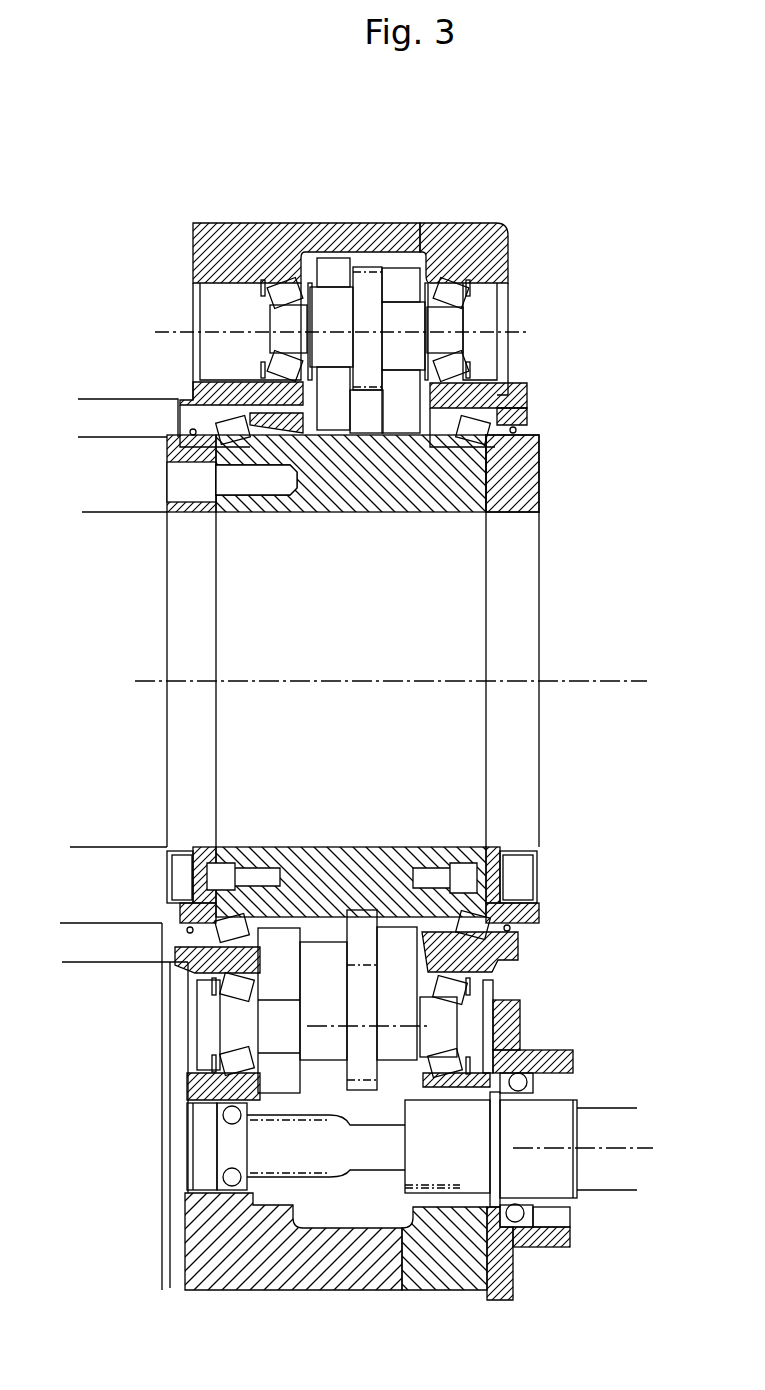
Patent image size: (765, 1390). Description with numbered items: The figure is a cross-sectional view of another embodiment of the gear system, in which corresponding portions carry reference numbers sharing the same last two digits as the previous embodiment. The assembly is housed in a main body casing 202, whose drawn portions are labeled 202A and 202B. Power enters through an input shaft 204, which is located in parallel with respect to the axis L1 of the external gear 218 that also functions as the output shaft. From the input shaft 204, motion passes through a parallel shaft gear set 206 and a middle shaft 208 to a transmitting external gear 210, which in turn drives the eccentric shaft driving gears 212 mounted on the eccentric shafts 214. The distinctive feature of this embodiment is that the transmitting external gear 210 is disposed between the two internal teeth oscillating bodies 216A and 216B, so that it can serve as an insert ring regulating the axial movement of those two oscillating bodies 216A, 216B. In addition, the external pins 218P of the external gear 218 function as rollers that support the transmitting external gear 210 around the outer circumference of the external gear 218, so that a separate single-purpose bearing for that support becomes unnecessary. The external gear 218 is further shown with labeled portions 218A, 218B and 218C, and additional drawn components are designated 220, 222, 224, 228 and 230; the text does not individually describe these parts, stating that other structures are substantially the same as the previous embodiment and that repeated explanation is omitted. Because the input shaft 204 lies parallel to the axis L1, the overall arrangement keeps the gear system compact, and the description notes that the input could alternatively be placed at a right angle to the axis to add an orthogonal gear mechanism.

The main body casing 202 is at (353, 292).
The housing first part 202A is at (290, 232).
The housing second part 202B is at (473, 309).
The eccentric shaft driving gears 212 is at (365, 292).
The eccentric shafts 214 is at (450, 343).
The transmitting external gear 210 is at (528, 473).
The external gear 218 is at (382, 641).
The rotor body main portion 218A is at (370, 490).
The rotor body key portion 218B is at (208, 510).
The rotor body end portion 218C is at (503, 506).
The external pins 218P is at (356, 913).
The axis L1 is at (647, 681).
The internal teeth oscillating body 216A is at (326, 928).
The internal teeth oscillating body 216B is at (394, 940).
The tapered roller bearing 224 is at (228, 990).
The gear 228 is at (270, 1070).
The middle shaft 208 is at (483, 1040).
The input shaft 204 is at (560, 1127).
The parallel shaft gear set 206 is at (312, 1093).
The coupling block 230 is at (447, 1146).
The ball bearing 220 is at (217, 1162).
The ball bearing 222 is at (512, 1215).